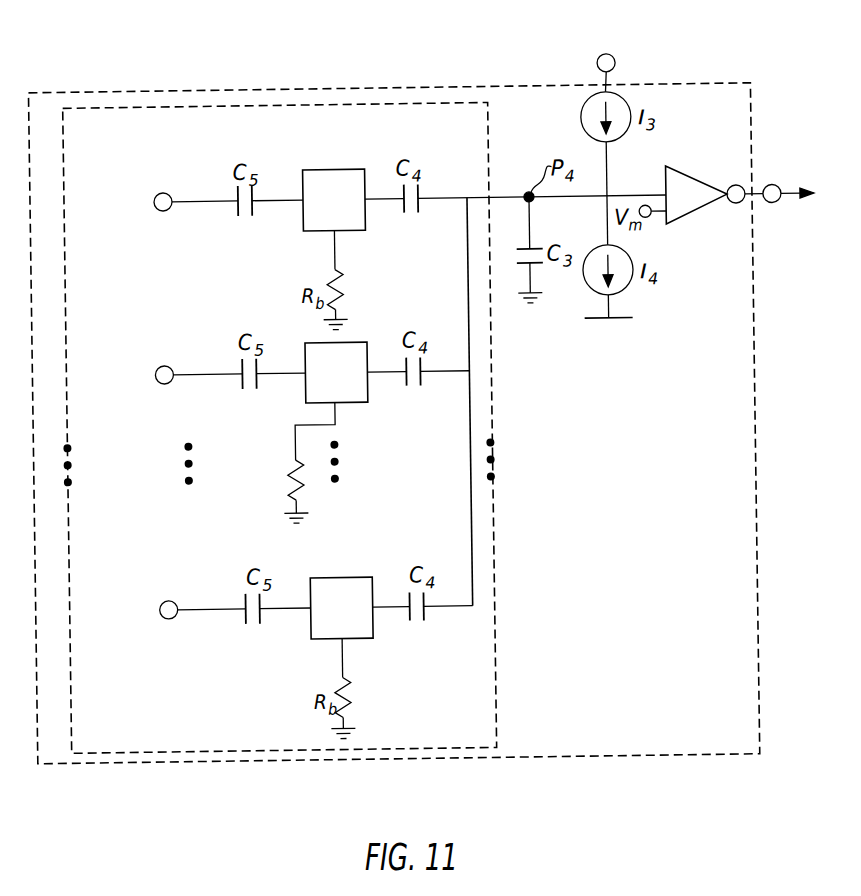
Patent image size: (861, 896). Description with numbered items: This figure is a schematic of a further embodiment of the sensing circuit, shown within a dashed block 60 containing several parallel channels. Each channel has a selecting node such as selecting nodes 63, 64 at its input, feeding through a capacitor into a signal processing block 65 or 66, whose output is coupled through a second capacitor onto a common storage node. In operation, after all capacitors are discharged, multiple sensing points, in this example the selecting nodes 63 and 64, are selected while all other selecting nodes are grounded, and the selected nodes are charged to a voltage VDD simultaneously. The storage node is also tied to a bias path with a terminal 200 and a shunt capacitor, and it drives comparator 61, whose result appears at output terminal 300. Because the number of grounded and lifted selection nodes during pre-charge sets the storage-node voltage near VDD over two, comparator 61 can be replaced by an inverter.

The sensing circuit block 60 is at (752, 420).
The comparator 61 is at (703, 214).
The selecting node 63 is at (152, 203).
The selecting node 64 is at (151, 375).
The signal processing block 65 is at (331, 172).
The signal processing block 66 is at (367, 406).
The bias input terminal 200 is at (606, 60).
The output terminal 300 is at (773, 212).